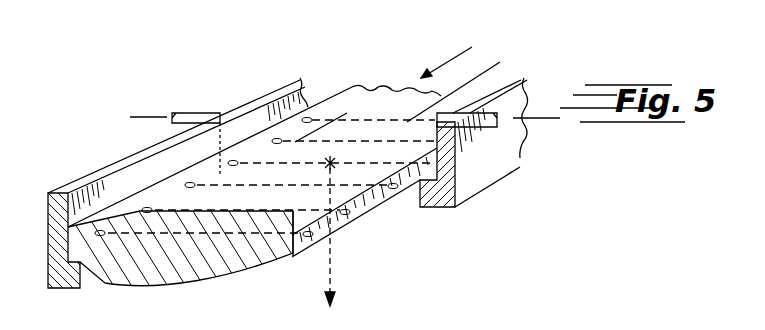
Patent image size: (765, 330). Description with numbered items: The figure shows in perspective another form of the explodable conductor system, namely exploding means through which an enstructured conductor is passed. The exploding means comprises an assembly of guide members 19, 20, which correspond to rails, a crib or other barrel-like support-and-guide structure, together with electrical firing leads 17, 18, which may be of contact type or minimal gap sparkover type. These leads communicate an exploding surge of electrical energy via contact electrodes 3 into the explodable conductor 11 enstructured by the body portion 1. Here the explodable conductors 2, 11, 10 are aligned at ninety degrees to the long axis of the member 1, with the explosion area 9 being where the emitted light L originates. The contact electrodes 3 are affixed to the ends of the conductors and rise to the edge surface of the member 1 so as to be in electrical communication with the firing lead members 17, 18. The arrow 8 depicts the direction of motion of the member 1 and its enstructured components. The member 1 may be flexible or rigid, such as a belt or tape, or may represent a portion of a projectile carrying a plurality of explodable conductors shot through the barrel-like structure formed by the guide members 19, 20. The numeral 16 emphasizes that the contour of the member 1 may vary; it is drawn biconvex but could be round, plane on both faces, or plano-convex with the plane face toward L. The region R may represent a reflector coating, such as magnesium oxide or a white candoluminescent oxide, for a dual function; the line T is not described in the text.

The body portion 1 is at (400, 102).
The explodable conductor 2 is at (333, 166).
The contact electrodes 3 is at (455, 172).
The arrow 8 is at (454, 62).
The explosion area 9 is at (330, 163).
The explodable conductor 10 is at (332, 235).
The explodable conductor 11 is at (467, 85).
The contour of member 16 is at (364, 97).
The electrical firing lead 17 is at (197, 116).
The electrical firing lead 18 is at (497, 112).
The guide member 19 is at (107, 168).
The guide member 20 is at (493, 162).
The reflector coating R is at (265, 178).
The emitted light L is at (337, 238).
The datum line T is at (560, 124).